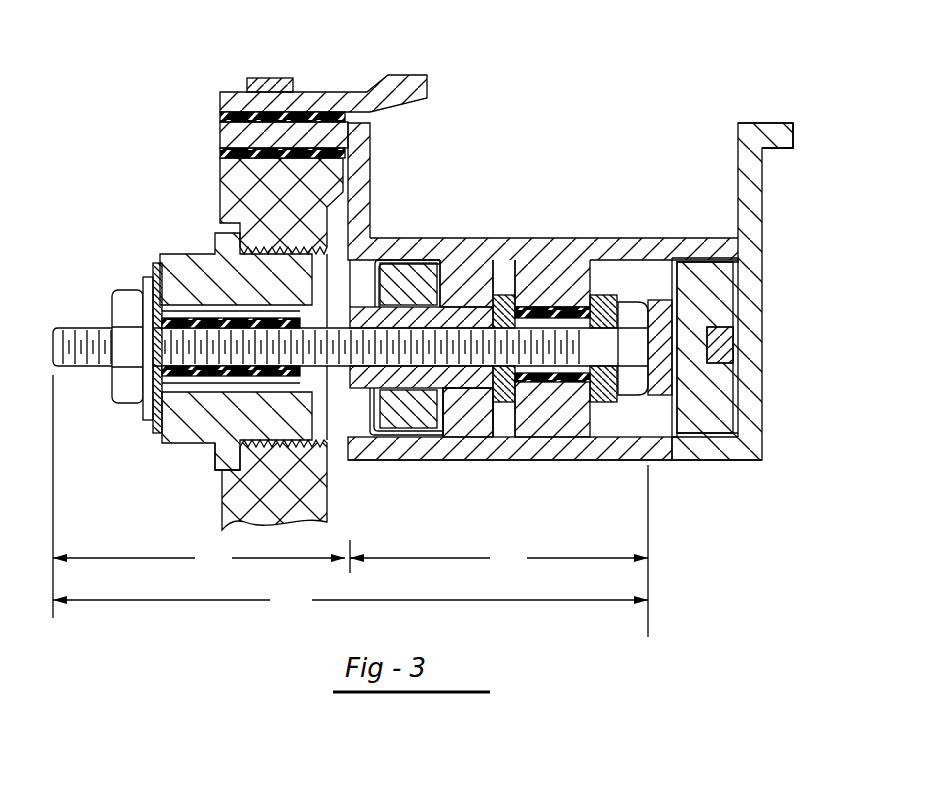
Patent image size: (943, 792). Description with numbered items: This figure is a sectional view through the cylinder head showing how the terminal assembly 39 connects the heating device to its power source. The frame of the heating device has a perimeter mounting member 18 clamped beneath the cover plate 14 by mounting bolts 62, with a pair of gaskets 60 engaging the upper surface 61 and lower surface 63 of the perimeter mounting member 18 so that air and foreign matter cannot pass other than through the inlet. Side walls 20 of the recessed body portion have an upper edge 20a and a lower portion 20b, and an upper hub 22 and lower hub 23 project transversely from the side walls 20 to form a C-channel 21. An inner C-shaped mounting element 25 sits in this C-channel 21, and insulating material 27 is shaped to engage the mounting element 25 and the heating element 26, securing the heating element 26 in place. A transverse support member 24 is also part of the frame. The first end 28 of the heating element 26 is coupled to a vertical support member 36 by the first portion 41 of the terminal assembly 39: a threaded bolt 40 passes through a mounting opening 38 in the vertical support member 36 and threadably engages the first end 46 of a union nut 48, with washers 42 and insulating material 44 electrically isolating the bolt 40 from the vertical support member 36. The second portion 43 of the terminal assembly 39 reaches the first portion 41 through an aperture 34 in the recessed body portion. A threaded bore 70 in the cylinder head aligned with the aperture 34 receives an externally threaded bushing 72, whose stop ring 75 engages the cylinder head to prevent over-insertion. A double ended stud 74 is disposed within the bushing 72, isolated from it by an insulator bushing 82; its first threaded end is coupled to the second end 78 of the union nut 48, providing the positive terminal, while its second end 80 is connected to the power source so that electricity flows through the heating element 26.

The cover plate 14 is at (233, 100).
The perimeter mounting member 18 is at (340, 137).
The side walls 20 is at (357, 188).
The upper edge 20a is at (752, 205).
The lower portion 20b is at (752, 440).
The C-channel 21 is at (758, 301).
The upper hub 22 is at (412, 262).
The lower hub 23 is at (720, 456).
The transverse support member 24 is at (465, 250).
The C-shaped mounting element 25 is at (735, 345).
The heating element 26 is at (682, 265).
The insulating material 27 is at (712, 398).
The first end 28 is at (642, 302).
The aperture 34 is at (320, 243).
The vertical support member 36 is at (537, 262).
The mounting opening 38 is at (545, 296).
The terminal assembly 39 is at (350, 600).
The threaded bolt 40 is at (662, 300).
The first portion 41 is at (499, 551).
The washers 42 is at (500, 294).
The second portion 43 is at (201, 496).
The insulating material 44 is at (597, 293).
The first end 46 is at (482, 392).
The union nut 48 is at (437, 382).
The gaskets 60 is at (222, 152).
The upper surface 61 is at (762, 122).
The mounting bolts 62 is at (272, 78).
The lower surface 63 is at (776, 150).
The threaded bore 70 is at (214, 252).
The threaded bushing 72 is at (185, 428).
The double ended stud 74 is at (120, 282).
The stop ring 75 is at (148, 413).
The second end 78 is at (370, 390).
The second end 80 is at (62, 328).
The insulator bushing 82 is at (153, 427).